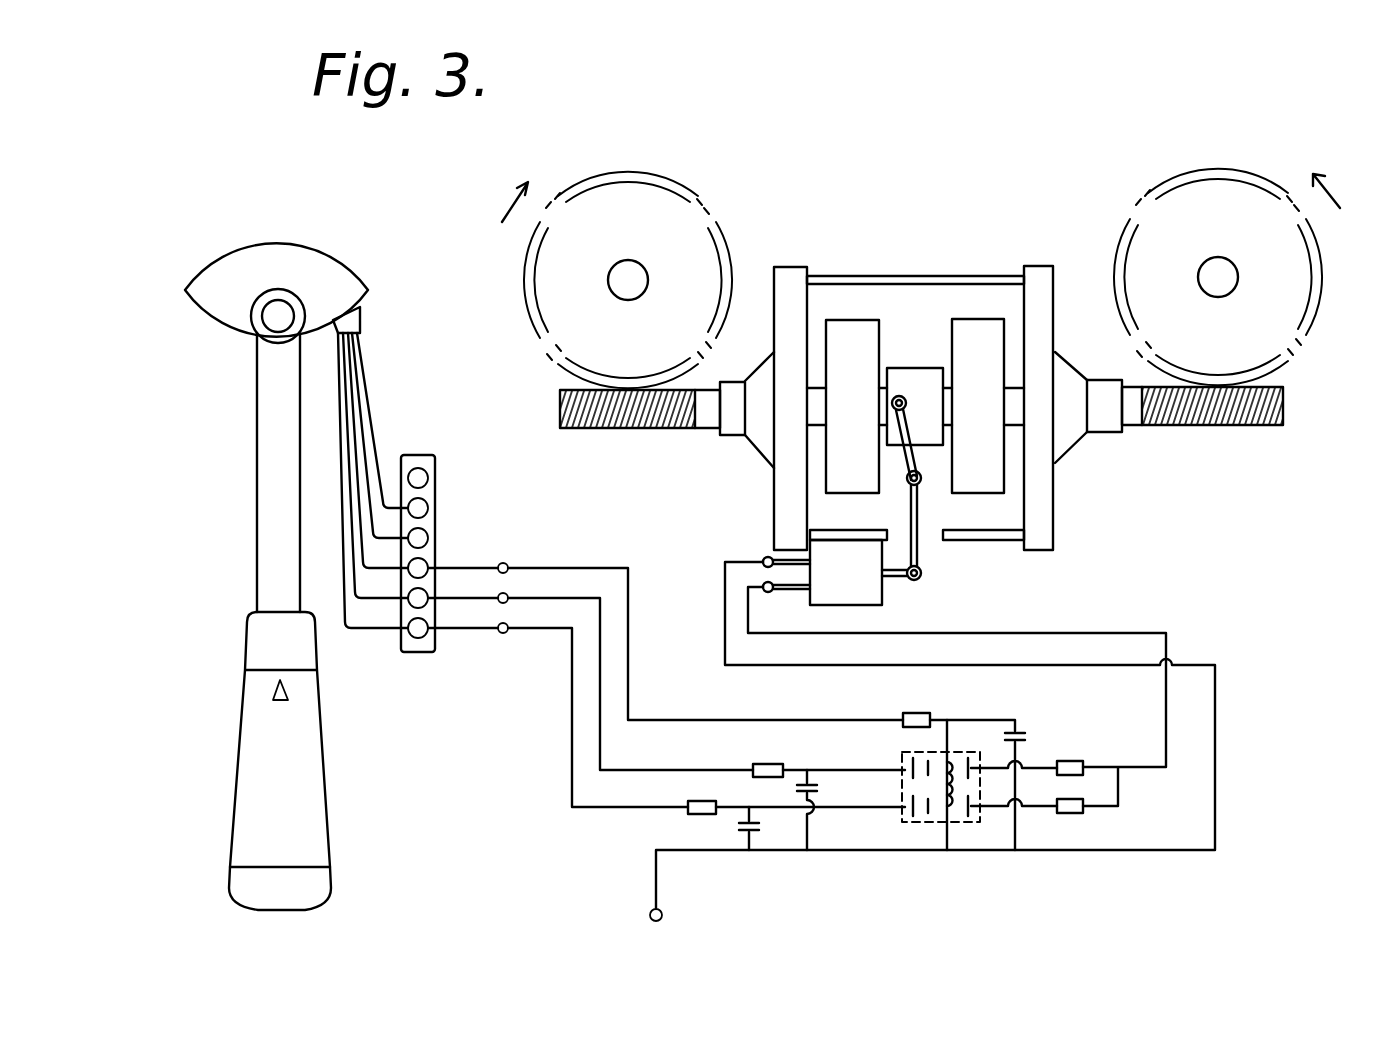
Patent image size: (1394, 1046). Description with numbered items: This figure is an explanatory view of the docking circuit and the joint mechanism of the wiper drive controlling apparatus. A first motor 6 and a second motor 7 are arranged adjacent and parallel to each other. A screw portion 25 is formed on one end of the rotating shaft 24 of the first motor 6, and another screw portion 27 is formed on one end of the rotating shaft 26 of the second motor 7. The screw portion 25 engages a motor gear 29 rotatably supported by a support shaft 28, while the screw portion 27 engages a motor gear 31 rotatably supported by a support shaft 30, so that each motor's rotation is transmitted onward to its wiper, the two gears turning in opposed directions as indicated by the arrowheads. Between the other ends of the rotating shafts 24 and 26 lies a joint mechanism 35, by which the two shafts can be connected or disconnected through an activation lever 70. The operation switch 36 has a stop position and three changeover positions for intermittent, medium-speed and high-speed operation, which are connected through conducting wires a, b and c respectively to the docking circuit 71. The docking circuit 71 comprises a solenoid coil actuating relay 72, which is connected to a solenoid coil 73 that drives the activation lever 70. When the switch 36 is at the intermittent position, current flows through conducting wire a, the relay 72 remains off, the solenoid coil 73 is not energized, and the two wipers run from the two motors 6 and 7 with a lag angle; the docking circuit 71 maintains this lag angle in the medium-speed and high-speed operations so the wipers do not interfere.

The operation switch 36 is at (236, 773).
The motor gear 29 is at (660, 192).
The support shaft 28 is at (633, 278).
The motor gear 31 is at (1225, 190).
The support shaft 30 is at (1222, 280).
The first motor 6 is at (851, 318).
The second motor 7 is at (978, 318).
The joint mechanism 35 is at (913, 384).
The screw portion 25 is at (577, 429).
The rotating shaft 24 is at (706, 420).
The rotating shaft 26 is at (1133, 418).
The screw portion 27 is at (1238, 420).
The activation lever 70 is at (928, 548).
The solenoid coil 73 is at (862, 596).
The solenoid coil actuating relay 72 is at (900, 760).
The docking circuit 71 is at (932, 742).
The conducting wire a is at (457, 568).
The conducting wire b is at (527, 598).
The conducting wire c is at (556, 627).